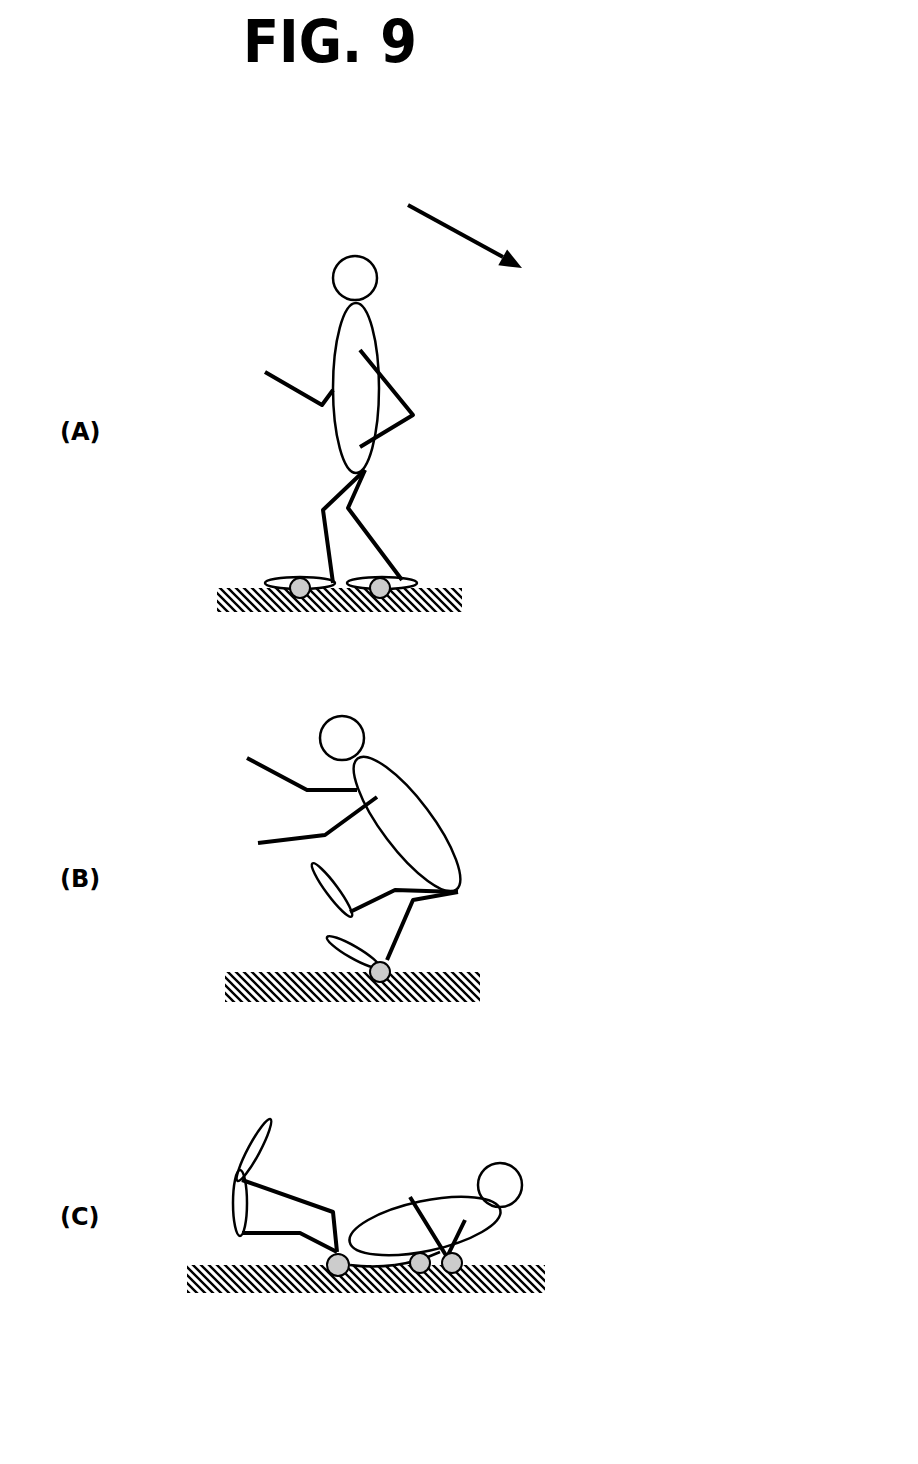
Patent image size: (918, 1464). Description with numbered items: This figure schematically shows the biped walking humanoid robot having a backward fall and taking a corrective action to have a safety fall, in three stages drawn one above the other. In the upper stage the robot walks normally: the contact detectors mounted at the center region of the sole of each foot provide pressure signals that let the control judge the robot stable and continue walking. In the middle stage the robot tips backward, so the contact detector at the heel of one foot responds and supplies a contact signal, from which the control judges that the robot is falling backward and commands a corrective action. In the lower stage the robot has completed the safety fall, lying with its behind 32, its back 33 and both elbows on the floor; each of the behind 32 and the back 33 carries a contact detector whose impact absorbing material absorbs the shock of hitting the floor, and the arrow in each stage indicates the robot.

The behind 32 is at (358, 1262).
The back 33 is at (402, 1255).